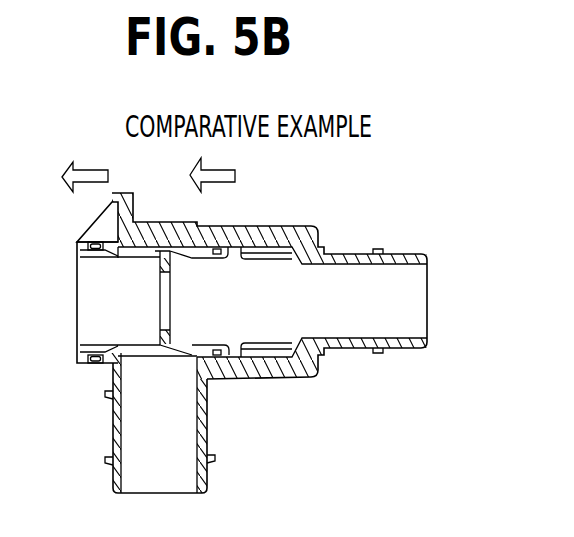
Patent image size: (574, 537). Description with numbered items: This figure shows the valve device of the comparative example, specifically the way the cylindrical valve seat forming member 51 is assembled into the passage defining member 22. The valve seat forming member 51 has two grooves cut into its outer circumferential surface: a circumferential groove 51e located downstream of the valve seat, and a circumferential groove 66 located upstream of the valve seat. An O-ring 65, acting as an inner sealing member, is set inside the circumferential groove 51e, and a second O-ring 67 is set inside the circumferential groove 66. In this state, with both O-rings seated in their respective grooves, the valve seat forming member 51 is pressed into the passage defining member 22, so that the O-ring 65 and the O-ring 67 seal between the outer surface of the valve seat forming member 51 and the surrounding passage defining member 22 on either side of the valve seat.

The passage defining member 22 is at (306, 229).
The valve seat forming member 51 is at (203, 250).
The circumferential groove 51e is at (240, 250).
The O-ring 65 is at (208, 366).
The circumferential groove 66 is at (98, 247).
The O-ring 67 is at (94, 363).